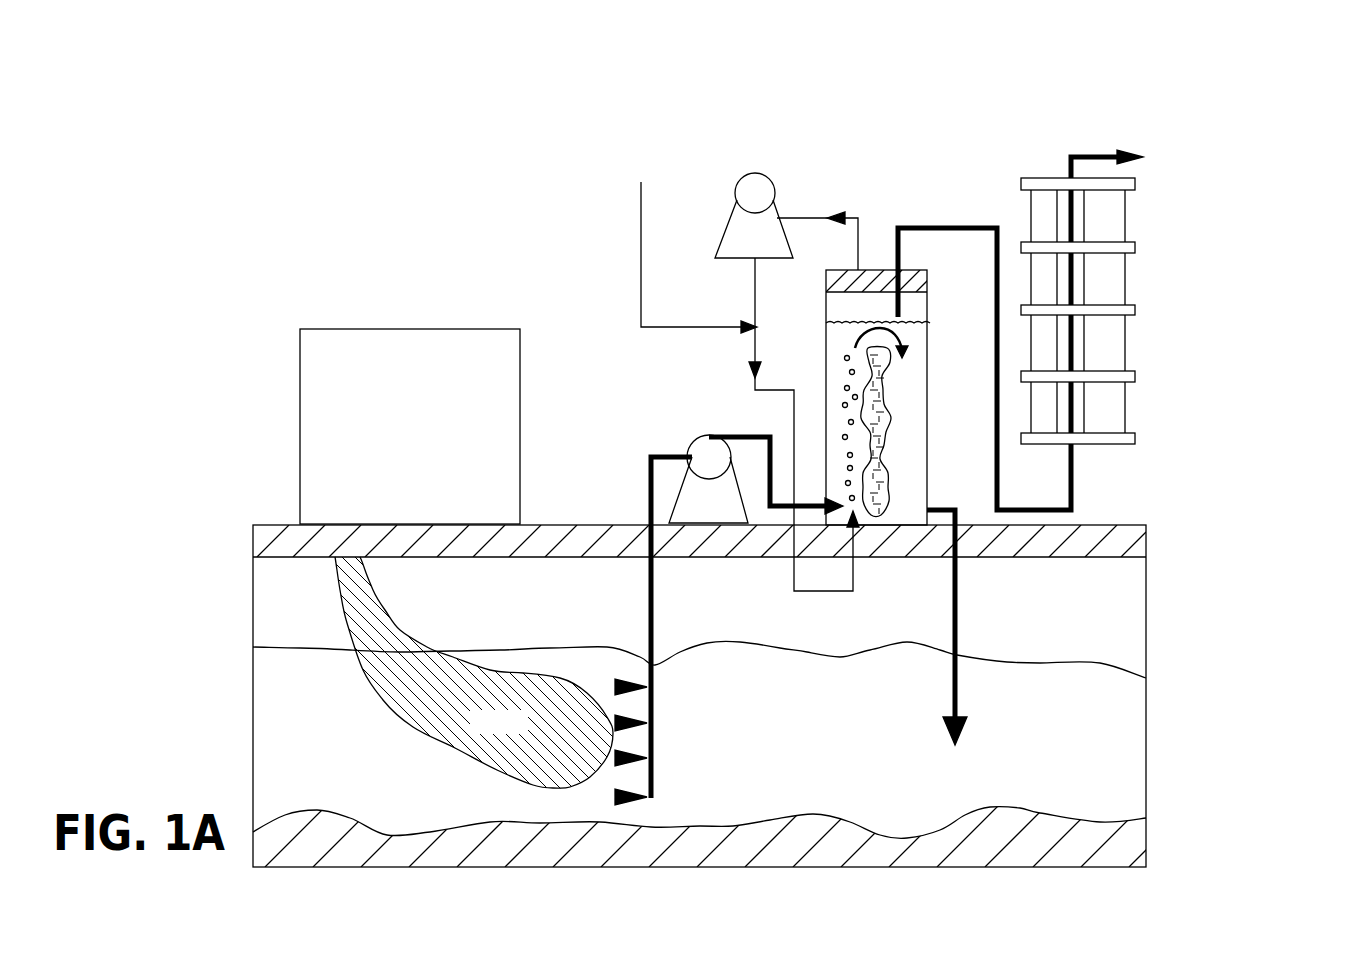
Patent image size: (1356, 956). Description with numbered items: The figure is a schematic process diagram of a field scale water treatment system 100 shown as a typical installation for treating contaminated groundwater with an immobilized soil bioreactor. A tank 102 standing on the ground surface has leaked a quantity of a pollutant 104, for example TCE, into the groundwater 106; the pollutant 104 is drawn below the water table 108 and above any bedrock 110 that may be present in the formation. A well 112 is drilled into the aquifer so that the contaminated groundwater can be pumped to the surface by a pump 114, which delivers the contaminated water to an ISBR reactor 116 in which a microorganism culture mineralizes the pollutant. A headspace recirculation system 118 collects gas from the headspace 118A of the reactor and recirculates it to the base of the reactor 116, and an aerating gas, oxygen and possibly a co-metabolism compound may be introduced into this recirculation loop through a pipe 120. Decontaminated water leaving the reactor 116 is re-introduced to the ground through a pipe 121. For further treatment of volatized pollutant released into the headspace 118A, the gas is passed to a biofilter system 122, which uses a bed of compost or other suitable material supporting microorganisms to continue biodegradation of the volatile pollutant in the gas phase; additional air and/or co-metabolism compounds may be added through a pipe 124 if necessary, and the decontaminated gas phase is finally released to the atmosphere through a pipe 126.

The field scale water treatment system 100 is at (1212, 193).
The tank 102 is at (413, 329).
The pollutant 104 is at (535, 775).
The groundwater 106 is at (1120, 760).
The water table 108 is at (1146, 678).
The bedrock 110 is at (1000, 837).
The well 112 is at (653, 772).
The pump 114 is at (731, 514).
The ISBR reactor 116 is at (928, 425).
The headspace recirculation system 118 is at (782, 180).
The headspace 118A is at (913, 310).
The pipe 120 is at (641, 262).
The pipe 121 is at (957, 613).
The biofilter system 122 is at (1125, 285).
The pipe 124 is at (1105, 458).
The pipe 126 is at (1128, 153).